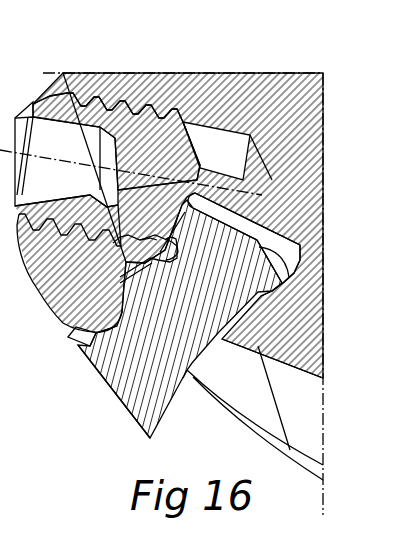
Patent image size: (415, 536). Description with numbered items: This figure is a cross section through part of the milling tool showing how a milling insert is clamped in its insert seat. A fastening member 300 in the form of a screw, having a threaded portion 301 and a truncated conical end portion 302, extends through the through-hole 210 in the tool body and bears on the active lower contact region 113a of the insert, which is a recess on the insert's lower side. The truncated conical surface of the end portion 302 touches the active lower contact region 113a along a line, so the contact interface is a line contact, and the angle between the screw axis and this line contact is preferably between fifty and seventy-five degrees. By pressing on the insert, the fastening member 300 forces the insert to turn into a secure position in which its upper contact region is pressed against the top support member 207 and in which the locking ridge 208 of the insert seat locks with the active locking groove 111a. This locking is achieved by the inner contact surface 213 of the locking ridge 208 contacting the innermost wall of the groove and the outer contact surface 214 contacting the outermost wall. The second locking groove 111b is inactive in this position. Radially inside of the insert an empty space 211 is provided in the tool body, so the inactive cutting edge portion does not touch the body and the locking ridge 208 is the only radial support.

The fastening member 300 is at (50, 108).
The threaded portion 301 is at (117, 108).
The truncated conical end portion 302 is at (194, 148).
The through-hole 210 is at (225, 157).
The active lower contact region 113a is at (187, 203).
The empty space 211 is at (297, 272).
The locking groove 111b is at (175, 249).
The top support member 207 is at (257, 318).
The locking ridge 208 is at (101, 315).
The outer contact surface 214 is at (84, 343).
The active locking groove 111a is at (116, 322).
The inner contact surface 213 is at (124, 300).